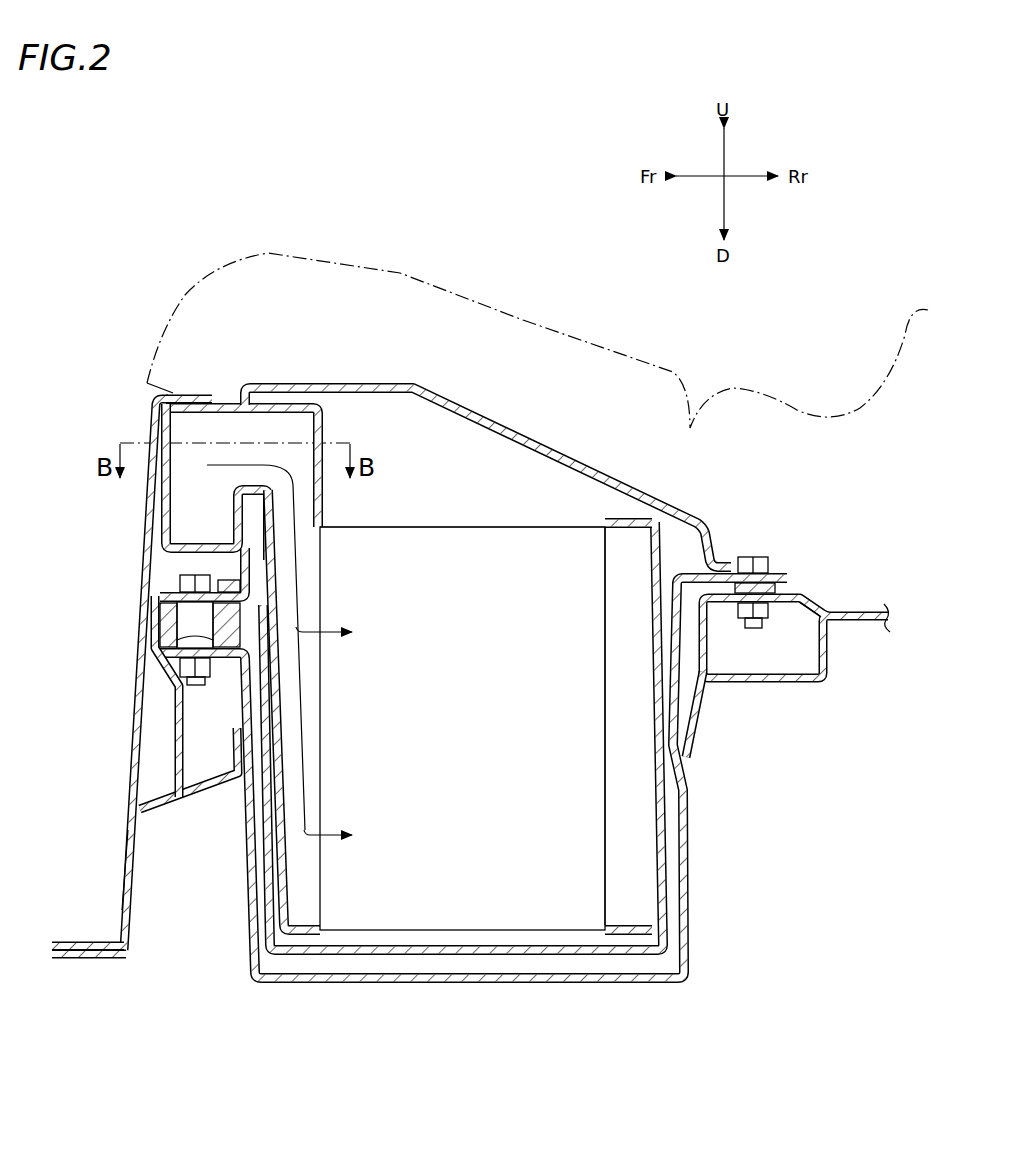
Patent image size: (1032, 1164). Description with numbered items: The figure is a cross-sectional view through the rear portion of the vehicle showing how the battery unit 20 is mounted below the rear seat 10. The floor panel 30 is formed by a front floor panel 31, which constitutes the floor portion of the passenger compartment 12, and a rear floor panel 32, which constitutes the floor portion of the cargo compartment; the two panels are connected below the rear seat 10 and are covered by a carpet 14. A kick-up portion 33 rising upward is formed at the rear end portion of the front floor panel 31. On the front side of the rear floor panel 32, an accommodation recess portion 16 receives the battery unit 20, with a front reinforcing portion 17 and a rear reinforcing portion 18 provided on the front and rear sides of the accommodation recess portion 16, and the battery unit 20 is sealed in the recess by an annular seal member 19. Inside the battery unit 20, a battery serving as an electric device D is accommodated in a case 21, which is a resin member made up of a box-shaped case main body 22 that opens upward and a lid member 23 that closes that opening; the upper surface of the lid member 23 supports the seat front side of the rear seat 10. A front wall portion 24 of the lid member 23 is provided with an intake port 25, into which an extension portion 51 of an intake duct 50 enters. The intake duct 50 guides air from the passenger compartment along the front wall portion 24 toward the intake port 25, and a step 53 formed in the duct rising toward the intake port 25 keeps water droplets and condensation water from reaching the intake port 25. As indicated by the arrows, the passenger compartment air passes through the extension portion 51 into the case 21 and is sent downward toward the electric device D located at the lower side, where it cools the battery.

The rear seat 10 is at (188, 297).
The passenger compartment 12 is at (102, 403).
The carpet 14 is at (128, 742).
The accommodation recess portion 16 is at (616, 970).
The front reinforcing portion 17 is at (212, 792).
The rear reinforcing portion 18 is at (828, 668).
The annular seal member 19 is at (175, 625).
The battery unit 20 is at (491, 428).
The case 21 is at (488, 668).
The case main body 22 is at (415, 958).
The lid member 23 is at (565, 452).
The front wall portion 24 is at (222, 578).
The intake port 25 is at (218, 400).
The floor panel 30 is at (76, 938).
The front floor panel 31 is at (88, 960).
The rear floor panel 32 is at (820, 607).
The kick-up portion 33 is at (120, 870).
The intake duct 50 is at (292, 402).
The extension portion 51 is at (360, 402).
The step 53 is at (233, 494).
The electric device D is at (425, 520).